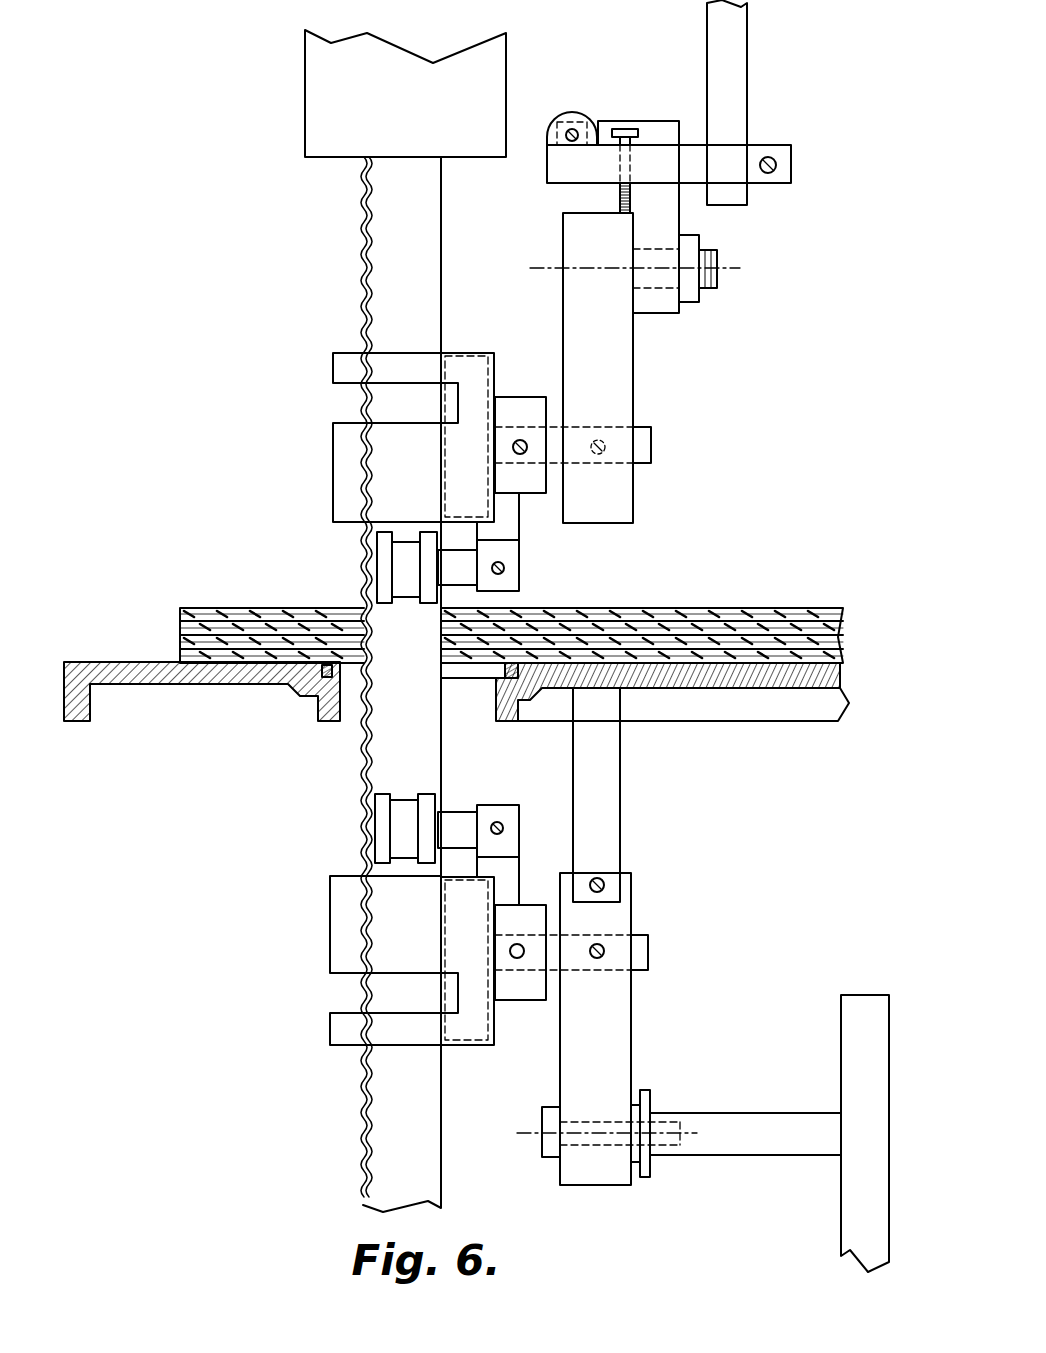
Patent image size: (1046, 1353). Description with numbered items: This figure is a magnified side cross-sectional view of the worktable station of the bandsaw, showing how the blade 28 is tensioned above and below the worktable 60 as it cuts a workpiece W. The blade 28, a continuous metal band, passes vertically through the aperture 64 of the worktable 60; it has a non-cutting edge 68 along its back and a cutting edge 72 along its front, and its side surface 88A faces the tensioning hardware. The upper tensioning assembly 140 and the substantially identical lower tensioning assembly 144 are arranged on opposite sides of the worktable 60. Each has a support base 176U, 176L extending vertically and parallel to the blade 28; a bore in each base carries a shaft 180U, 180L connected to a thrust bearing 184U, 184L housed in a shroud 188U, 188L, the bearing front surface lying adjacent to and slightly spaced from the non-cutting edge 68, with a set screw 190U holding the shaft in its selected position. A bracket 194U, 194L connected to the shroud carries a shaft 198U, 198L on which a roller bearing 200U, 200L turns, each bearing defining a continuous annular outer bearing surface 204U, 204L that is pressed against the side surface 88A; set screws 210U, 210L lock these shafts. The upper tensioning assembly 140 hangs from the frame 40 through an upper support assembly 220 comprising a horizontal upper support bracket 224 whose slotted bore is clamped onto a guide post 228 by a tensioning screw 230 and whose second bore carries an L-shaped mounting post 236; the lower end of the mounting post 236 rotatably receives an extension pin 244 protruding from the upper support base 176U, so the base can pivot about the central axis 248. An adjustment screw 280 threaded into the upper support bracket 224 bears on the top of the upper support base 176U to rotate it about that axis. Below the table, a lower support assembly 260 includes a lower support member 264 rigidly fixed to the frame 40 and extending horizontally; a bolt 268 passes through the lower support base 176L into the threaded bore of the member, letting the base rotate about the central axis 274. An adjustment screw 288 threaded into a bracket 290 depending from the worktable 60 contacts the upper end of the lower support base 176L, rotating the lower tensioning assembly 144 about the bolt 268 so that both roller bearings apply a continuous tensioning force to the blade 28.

The blade 28 is at (427, 198).
The side surface 88A is at (426, 692).
The workpiece W is at (759, 607).
The worktable 60 is at (136, 661).
The aperture 64 is at (477, 667).
The non-cutting edge 68 is at (443, 746).
The cutting edge 72 is at (350, 762).
The upper tensioning assembly 140 is at (492, 591).
The lower tensioning assembly 144 is at (516, 971).
The upper support base 176U is at (621, 365).
The lower support base 176L is at (618, 1048).
The shaft 180U is at (555, 440).
The shaft 180L is at (549, 906).
The thrust bearing 184U is at (473, 372).
The thrust bearing 184L is at (467, 1040).
The shroud 188U is at (333, 465).
The shroud 188L is at (330, 905).
The set screw 190U is at (603, 443).
The bracket 194U is at (521, 530).
The bracket 194L is at (521, 838).
The shaft 198U is at (462, 588).
The shaft 198L is at (455, 812).
The roller bearing 200U is at (397, 562).
The roller bearing 200L is at (395, 800).
The outer bearing surface 204U is at (427, 540).
The outer bearing surface 204L is at (426, 831).
The set screw 210U is at (504, 569).
The set screw 210L is at (503, 826).
The upper support assembly 220 is at (692, 156).
The upper support bracket 224 is at (773, 143).
The guide post 228 is at (742, 48).
The tensioning screw 230 is at (777, 168).
The mounting post 236 is at (660, 122).
The extension pin 244 is at (719, 276).
The central axis 248 is at (545, 267).
The adjustment screw 280 is at (615, 128).
The adjustment screw 288 is at (602, 880).
The bracket 290 is at (617, 783).
The lower support assembly 260 is at (661, 1187).
The lower support member 264 is at (763, 1156).
The bolt 268 is at (590, 1138).
The central axis 274 is at (528, 1143).
The frame 40 is at (855, 995).